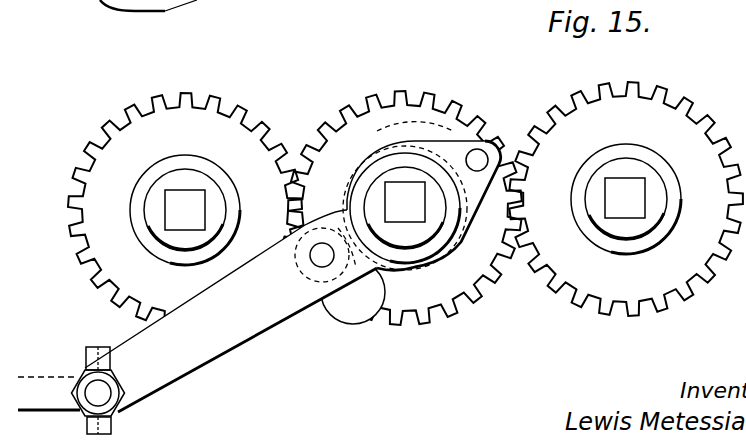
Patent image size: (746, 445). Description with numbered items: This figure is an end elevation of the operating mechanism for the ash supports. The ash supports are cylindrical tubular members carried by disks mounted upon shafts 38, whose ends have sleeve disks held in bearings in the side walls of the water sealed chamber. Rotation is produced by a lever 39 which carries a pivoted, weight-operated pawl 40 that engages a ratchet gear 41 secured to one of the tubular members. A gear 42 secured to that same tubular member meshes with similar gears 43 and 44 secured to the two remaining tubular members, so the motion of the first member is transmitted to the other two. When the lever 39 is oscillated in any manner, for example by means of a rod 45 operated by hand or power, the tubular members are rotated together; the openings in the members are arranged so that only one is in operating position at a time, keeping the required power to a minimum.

The shaft 38 is at (193, 202).
The lever 39 is at (259, 321).
The weight-operated pawl 40 is at (318, 222).
The ratchet gear 41 is at (440, 137).
The gear 42 is at (398, 112).
The gear 43 is at (215, 133).
The gear 44 is at (583, 123).
The rod 45 is at (40, 382).